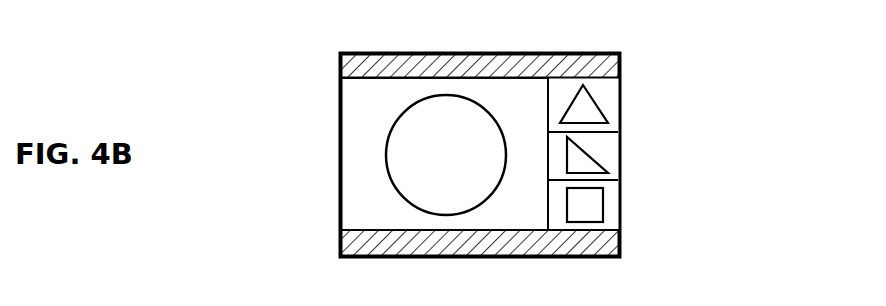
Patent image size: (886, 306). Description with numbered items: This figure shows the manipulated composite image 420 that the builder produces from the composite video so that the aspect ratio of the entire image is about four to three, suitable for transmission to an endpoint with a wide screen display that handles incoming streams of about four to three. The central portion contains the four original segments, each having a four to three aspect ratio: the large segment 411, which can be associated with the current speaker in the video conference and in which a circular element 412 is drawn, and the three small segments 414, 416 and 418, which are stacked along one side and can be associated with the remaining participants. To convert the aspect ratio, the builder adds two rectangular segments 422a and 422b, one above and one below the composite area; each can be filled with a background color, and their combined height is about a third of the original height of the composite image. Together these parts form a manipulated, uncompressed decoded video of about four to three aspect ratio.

The manipulated composite image 420 is at (750, 130).
The large segment 411 is at (357, 198).
The circular icon 412 is at (386, 153).
The small segment 414 is at (606, 123).
The small segment 416 is at (608, 172).
The small segment 418 is at (605, 222).
The rectangular segment 422a is at (477, 67).
The rectangular segment 422b is at (470, 247).